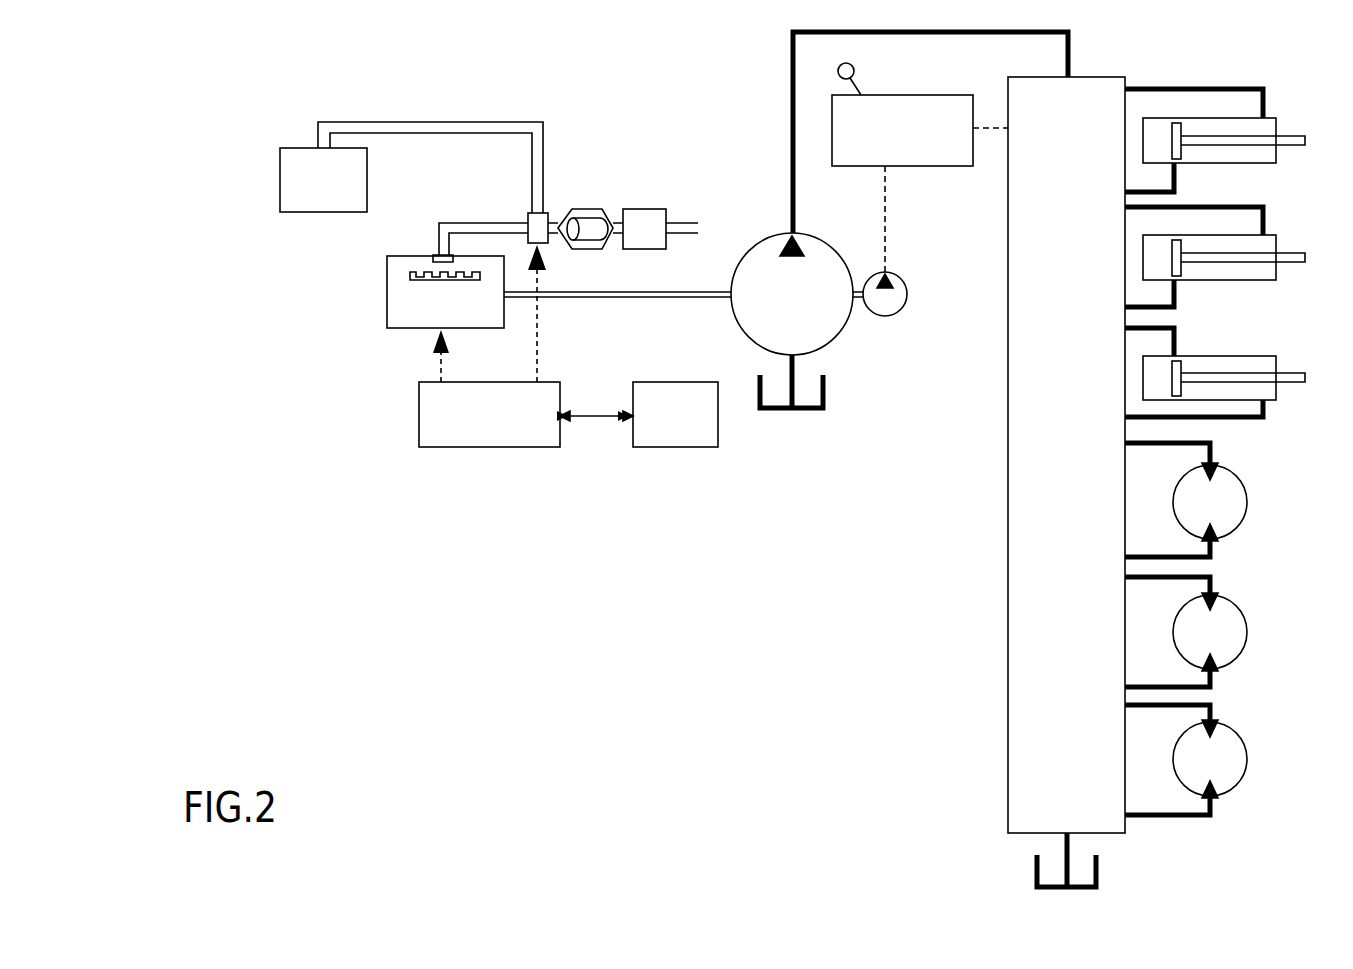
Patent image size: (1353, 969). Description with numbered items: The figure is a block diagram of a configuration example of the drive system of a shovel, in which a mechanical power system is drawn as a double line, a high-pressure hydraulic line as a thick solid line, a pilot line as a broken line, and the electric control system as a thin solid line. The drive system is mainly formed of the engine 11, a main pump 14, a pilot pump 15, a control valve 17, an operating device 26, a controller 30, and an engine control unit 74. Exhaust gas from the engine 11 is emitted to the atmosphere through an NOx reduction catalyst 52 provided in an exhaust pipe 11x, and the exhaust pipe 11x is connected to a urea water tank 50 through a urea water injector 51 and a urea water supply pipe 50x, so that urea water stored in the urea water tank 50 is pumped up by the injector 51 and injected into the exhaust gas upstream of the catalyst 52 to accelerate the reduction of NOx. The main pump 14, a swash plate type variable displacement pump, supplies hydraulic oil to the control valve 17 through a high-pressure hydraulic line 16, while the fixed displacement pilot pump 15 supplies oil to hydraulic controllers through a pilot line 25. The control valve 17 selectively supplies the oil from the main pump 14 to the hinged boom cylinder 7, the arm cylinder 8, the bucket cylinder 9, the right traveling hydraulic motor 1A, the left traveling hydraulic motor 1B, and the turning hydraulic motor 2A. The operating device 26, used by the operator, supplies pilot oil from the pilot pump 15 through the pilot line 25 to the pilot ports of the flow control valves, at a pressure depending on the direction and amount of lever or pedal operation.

The urea water tank 50 is at (280, 183).
The urea water supply pipe 50x is at (345, 122).
The engine 11 is at (387, 287).
The exhaust pipe 11x is at (439, 238).
The urea water injector 51 is at (528, 215).
The NOx reduction catalyst 52 is at (584, 218).
The engine control unit (ECU) 74 is at (490, 447).
The controller 30 is at (673, 447).
The main pump 14 is at (835, 338).
The pilot pump 15 is at (894, 270).
The high-pressure hydraulic line 16 is at (792, 116).
The control valve 17 is at (1093, 77).
The pilot line 25 is at (884, 208).
The operating device 26 is at (938, 95).
The bucket cylinder 9 is at (1276, 125).
The arm cylinder 8 is at (1276, 242).
The hinged boom cylinder 7 is at (1276, 392).
The traveling hydraulic motor (for right) 1A is at (1234, 470).
The traveling hydraulic motor (for left) 1B is at (1234, 600).
The turning hydraulic motor 2A is at (1238, 730).